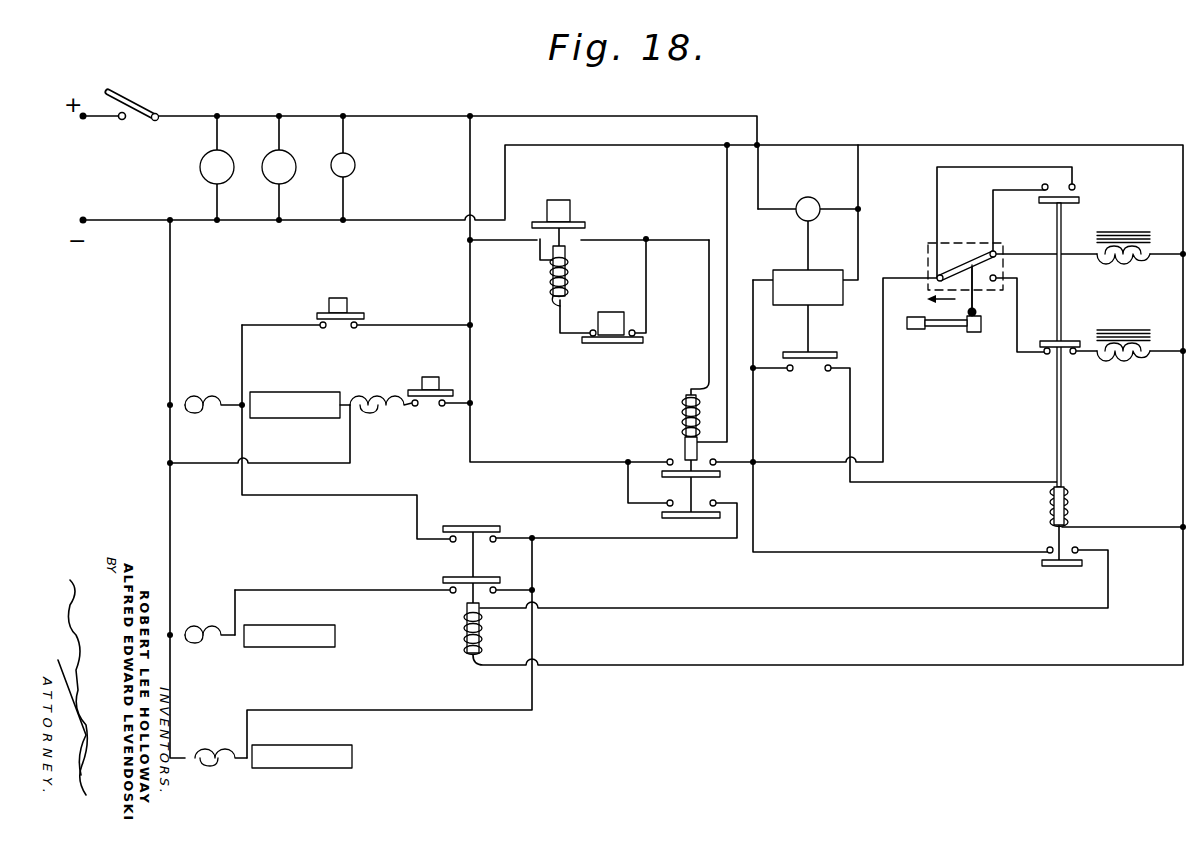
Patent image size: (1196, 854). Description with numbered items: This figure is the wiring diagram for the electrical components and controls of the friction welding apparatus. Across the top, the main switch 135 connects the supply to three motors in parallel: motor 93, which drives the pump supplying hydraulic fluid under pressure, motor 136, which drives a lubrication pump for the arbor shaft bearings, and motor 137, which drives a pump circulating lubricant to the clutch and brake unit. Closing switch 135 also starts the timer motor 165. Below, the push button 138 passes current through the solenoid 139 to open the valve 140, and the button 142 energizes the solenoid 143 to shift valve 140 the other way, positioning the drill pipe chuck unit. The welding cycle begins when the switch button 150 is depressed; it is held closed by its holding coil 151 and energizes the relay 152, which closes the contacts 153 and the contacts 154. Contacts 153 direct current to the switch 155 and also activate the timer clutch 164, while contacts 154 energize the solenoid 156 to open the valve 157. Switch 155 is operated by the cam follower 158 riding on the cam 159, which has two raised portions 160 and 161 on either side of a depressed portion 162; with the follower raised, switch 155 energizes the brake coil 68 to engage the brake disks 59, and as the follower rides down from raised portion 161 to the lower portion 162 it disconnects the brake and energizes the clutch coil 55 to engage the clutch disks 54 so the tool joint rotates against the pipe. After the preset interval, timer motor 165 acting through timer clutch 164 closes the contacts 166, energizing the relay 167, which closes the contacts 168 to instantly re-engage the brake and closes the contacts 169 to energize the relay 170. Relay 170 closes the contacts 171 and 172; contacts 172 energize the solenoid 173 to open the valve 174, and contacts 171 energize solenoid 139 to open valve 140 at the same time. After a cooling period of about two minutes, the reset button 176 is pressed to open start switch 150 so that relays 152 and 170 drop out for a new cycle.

The main switch 135 is at (160, 92).
The motor 137 is at (228, 156).
The motor 93 is at (294, 154).
The motor 136 is at (356, 165).
The switch button 150 is at (572, 186).
The holding coil 151 is at (571, 278).
The reset button 176 is at (620, 300).
The relay 152 is at (684, 410).
The contacts 153 is at (678, 458).
The contacts 154 is at (688, 498).
The push button 138 is at (328, 304).
The solenoid 139 is at (216, 383).
The valve 140 is at (262, 419).
The button 142 is at (437, 357).
The solenoid 143 is at (379, 415).
The timer motor 165 is at (818, 181).
The timer clutch 164 is at (786, 257).
The contacts 166 is at (807, 362).
The contacts 168 is at (1042, 177).
The switch 155 is at (983, 255).
The raised portion 161 is at (969, 333).
The raised portion 160 is at (915, 331).
The cam follower 158 is at (982, 318).
The depressed portion 162 is at (948, 329).
The cam 159 is at (916, 318).
The brake disks 59 is at (1150, 220).
The coil 68 is at (1106, 260).
The clutch disks 54 is at (1142, 330).
The coil 55 is at (1118, 357).
The relay 167 is at (1068, 502).
The contacts 169 is at (1042, 550).
The contacts 171 is at (460, 545).
The contacts 172 is at (463, 593).
The relay 170 is at (462, 637).
The solenoid 173 is at (217, 645).
The valve 174 is at (300, 646).
The solenoid 156 is at (228, 752).
The valve 157 is at (318, 734).